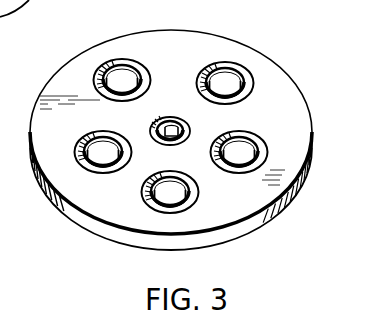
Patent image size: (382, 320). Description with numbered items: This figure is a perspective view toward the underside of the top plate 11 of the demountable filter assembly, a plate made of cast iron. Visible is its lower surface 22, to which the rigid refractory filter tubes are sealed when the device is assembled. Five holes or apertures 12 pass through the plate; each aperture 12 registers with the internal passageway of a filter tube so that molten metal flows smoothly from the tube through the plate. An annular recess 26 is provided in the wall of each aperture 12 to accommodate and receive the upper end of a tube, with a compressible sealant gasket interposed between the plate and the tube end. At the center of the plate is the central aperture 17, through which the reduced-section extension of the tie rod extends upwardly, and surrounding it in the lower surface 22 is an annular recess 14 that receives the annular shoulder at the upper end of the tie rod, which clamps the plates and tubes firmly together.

The top plate 11 is at (263, 62).
The holes or apertures 12 is at (236, 147).
The annular recess 14 is at (167, 140).
The central aperture 17 is at (162, 117).
The lower surface 22 is at (242, 208).
The annular recess 26 is at (134, 68).